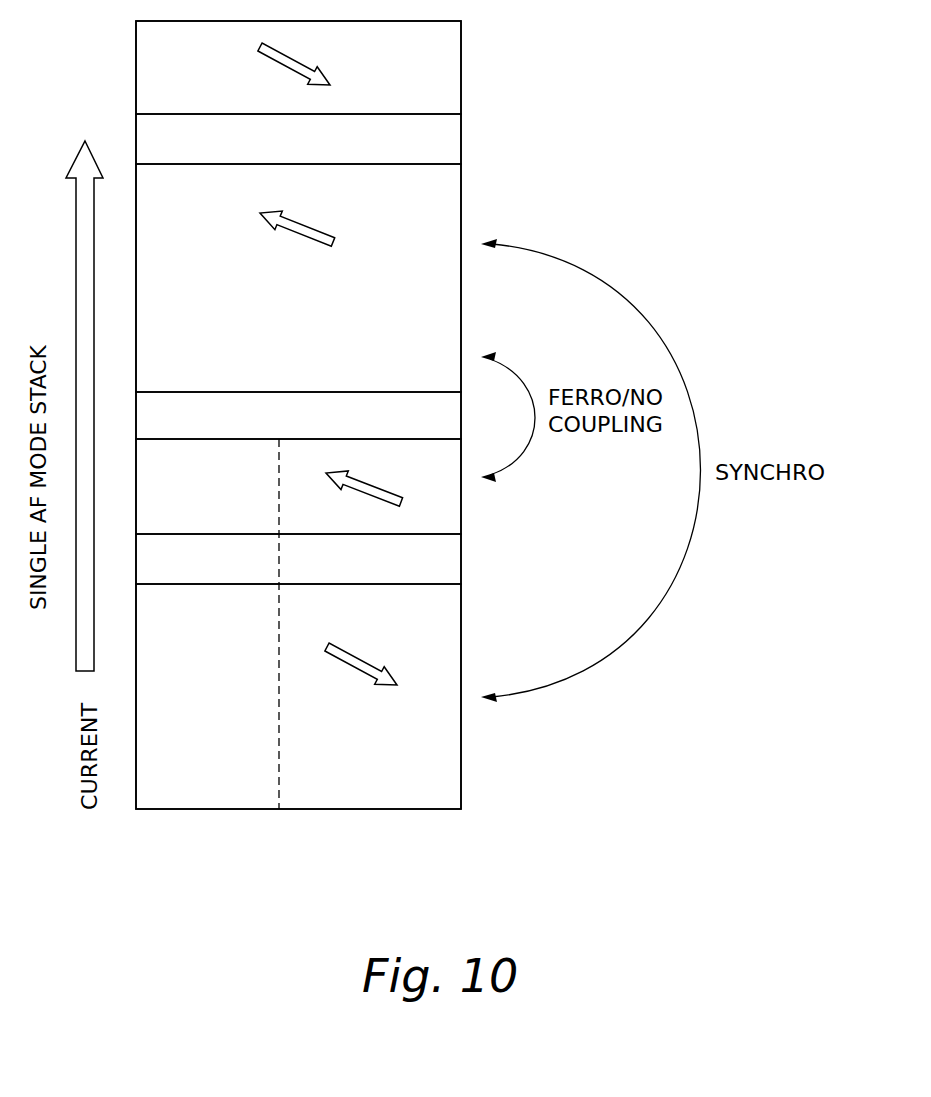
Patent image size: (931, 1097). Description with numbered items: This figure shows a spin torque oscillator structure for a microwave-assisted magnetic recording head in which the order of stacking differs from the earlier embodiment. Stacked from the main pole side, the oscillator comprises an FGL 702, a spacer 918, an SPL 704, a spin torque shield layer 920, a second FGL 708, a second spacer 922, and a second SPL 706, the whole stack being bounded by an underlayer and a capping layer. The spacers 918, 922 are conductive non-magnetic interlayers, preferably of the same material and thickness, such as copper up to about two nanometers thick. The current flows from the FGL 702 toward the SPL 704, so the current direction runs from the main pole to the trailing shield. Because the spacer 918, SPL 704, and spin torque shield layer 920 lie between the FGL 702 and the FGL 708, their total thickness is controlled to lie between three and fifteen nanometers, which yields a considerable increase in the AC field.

The FGL 702 is at (452, 627).
The SPL 704 is at (452, 516).
The SPL 706 is at (452, 66).
The FGL 708 is at (452, 303).
The non-magnetic interlayer 918 is at (452, 559).
The spin torque shield layer 920 is at (452, 417).
The non-magnetic interlayer 922 is at (452, 139).